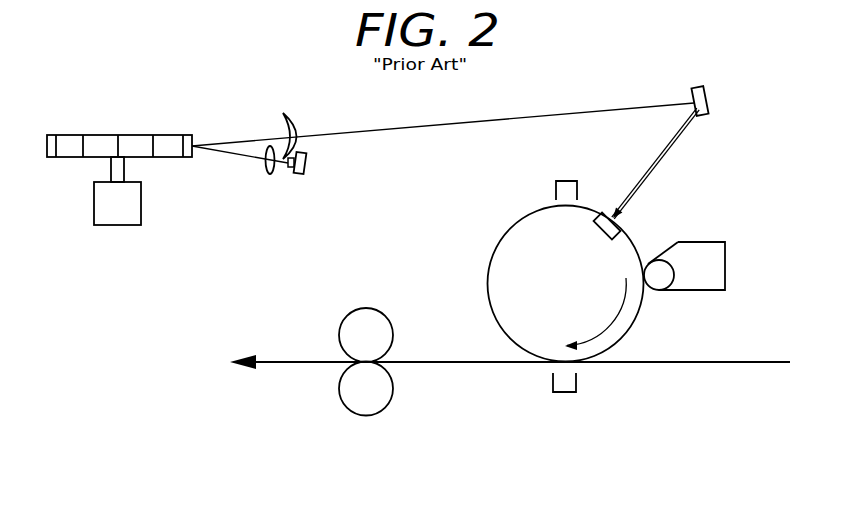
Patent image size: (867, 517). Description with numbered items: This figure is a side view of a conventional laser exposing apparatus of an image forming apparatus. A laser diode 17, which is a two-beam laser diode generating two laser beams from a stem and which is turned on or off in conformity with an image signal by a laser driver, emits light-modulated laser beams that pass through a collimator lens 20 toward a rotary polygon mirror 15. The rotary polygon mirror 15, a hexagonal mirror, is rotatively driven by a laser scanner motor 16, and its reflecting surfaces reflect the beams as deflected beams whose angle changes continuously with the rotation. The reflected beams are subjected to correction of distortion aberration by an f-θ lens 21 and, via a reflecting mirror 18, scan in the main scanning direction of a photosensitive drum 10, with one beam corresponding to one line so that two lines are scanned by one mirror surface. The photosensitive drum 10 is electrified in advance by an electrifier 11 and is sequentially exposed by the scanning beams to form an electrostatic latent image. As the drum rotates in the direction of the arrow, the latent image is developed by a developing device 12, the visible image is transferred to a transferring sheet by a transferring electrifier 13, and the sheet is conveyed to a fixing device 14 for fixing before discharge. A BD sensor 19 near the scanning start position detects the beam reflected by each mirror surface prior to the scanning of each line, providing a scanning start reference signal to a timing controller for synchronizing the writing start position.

The photosensitive drum 10 is at (522, 218).
The electrifier 11 is at (573, 180).
The developing device 12 is at (725, 250).
The transferring electrifier 13 is at (565, 392).
The fixing device 14 is at (368, 308).
The rotary polygon mirror 15 is at (107, 135).
The laser scanner motor 16 is at (141, 212).
The laser diode 17 is at (293, 176).
The reflecting mirror 18 is at (709, 99).
The BD sensor 19 is at (622, 225).
The collimator lens 20 is at (268, 173).
The f-θ lens 21 is at (294, 119).